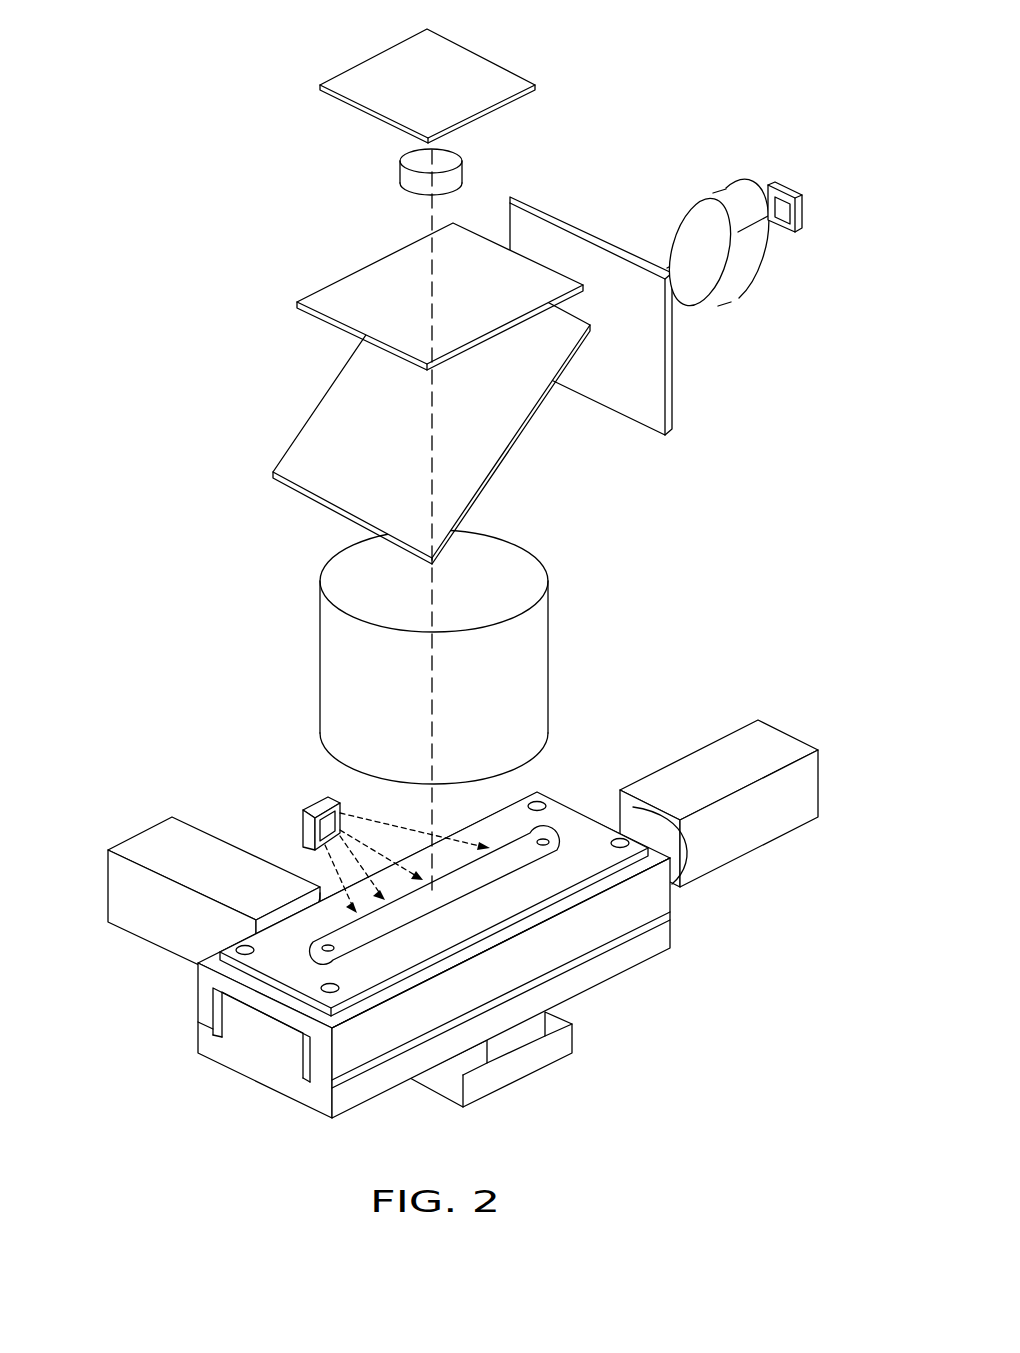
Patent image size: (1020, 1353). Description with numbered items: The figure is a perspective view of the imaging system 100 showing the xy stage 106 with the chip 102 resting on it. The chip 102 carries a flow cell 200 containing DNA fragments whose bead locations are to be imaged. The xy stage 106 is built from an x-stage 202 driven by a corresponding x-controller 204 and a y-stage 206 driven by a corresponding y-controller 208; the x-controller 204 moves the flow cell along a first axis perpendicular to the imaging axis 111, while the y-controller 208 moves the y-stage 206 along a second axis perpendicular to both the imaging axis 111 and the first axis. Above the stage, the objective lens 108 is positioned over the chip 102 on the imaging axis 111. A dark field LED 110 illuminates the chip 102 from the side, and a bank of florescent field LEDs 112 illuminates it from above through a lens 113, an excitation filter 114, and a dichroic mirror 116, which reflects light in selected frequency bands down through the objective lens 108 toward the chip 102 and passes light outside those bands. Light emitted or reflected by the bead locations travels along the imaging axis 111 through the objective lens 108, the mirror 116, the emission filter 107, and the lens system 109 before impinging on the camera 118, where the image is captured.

The imager 100 is at (680, 98).
The chip 102 is at (578, 822).
The xy stage 106 is at (300, 1113).
The emission filter 107 is at (342, 288).
The objective lens 108 is at (333, 643).
The lens system 109 is at (453, 176).
The dark field LED 110 is at (318, 805).
The imaging axis 111 is at (430, 207).
The florescent field LEDs 112 is at (772, 185).
The lens 113 is at (740, 286).
The excitation filter 114 is at (558, 221).
The dichroic mirror 116 is at (307, 447).
The camera 118 is at (348, 78).
The flow cell 200 is at (508, 862).
The x-stage 202 is at (657, 900).
The x-controller 204 is at (782, 745).
The y-stage 206 is at (208, 1043).
The y-controller 208 is at (150, 842).